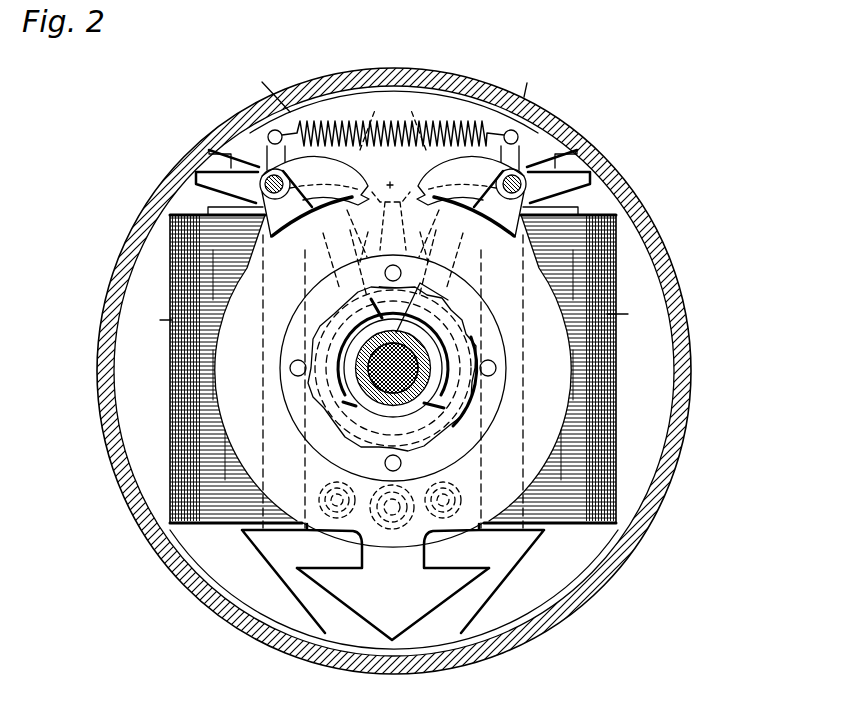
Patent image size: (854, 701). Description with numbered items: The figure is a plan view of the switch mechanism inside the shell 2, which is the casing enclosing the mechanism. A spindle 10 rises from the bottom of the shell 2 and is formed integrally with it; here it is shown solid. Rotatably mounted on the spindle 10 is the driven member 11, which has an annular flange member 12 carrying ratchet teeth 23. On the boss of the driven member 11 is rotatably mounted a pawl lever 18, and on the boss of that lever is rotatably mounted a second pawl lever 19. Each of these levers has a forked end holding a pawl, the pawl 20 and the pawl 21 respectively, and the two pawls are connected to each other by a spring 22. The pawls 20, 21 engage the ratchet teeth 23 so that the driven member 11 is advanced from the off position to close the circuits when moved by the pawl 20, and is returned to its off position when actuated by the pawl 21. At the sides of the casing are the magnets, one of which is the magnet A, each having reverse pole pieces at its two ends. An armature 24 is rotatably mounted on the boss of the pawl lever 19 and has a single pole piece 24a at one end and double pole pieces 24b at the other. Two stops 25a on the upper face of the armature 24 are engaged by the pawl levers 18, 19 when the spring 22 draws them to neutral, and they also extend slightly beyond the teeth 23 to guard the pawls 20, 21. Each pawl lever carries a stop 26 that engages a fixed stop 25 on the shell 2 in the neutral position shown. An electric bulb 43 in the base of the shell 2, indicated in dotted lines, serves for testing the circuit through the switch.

The shell 2 is at (394, 67).
The spindle 10 is at (416, 350).
The driven member 11 is at (495, 339).
The annular flange member 12 is at (425, 380).
The pawl lever 18 is at (523, 197).
The second pawl lever 19 is at (265, 173).
The pawl 20 is at (471, 183).
The pawl 21 is at (314, 183).
The spring 22 is at (416, 121).
The ratchet teeth 23 is at (394, 244).
The armature 24 is at (535, 137).
The single pole piece 24a is at (393, 604).
The double pole pieces 24b is at (401, 83).
The fixed stop 25 is at (208, 168).
The stops 25a is at (393, 237).
The stop 26 is at (393, 187).
The electric bulb 43 is at (393, 180).
The magnet A is at (390, 320).